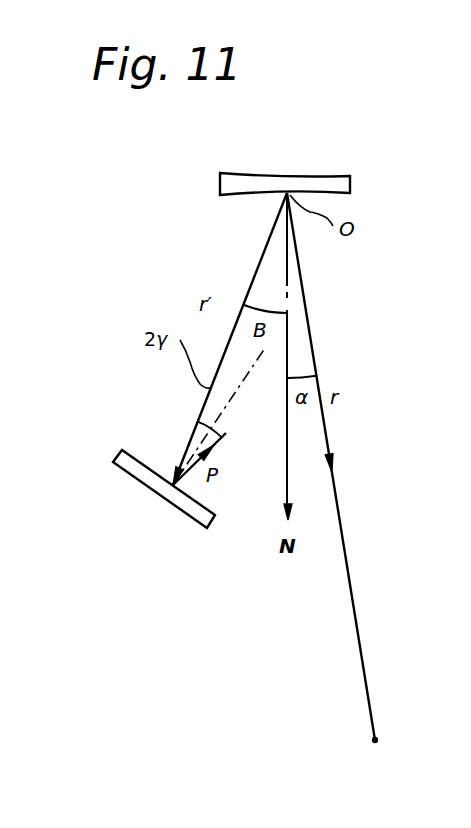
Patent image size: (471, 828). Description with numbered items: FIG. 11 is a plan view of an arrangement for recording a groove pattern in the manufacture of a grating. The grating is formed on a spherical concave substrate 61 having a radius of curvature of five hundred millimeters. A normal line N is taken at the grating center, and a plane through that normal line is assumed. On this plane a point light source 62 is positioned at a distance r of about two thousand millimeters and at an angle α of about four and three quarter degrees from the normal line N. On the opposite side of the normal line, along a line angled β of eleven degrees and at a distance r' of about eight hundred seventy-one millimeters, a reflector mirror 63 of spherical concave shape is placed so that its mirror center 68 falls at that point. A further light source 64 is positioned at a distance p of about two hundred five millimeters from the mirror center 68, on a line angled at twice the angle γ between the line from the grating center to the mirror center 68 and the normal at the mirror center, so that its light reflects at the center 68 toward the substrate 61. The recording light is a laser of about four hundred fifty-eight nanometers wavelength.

The spherical concave substrate 61 is at (350, 180).
The point light source 62 is at (372, 740).
The reflector mirror 63 is at (136, 485).
The light source 64 is at (226, 433).
The mirror center 68 is at (173, 484).